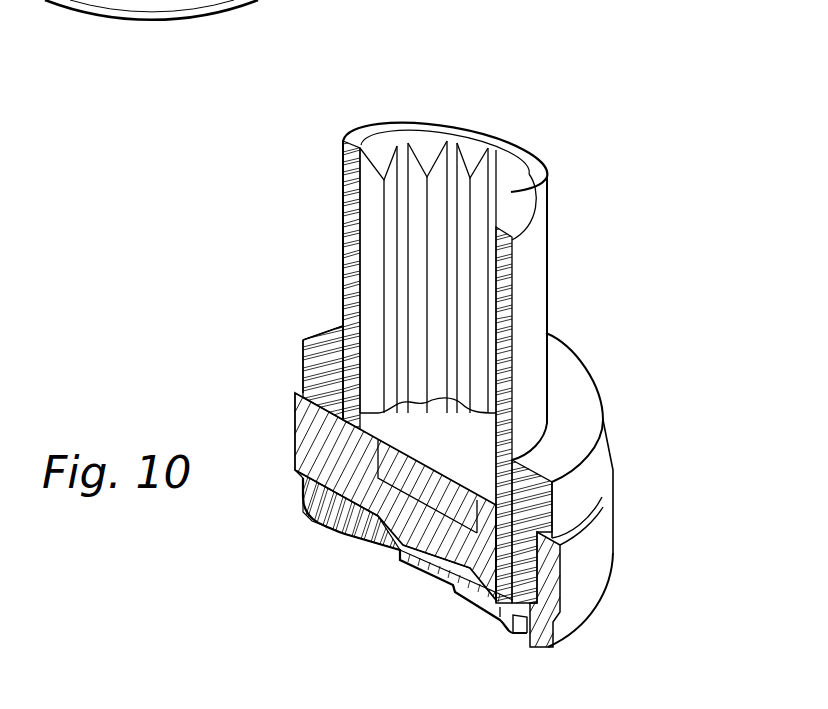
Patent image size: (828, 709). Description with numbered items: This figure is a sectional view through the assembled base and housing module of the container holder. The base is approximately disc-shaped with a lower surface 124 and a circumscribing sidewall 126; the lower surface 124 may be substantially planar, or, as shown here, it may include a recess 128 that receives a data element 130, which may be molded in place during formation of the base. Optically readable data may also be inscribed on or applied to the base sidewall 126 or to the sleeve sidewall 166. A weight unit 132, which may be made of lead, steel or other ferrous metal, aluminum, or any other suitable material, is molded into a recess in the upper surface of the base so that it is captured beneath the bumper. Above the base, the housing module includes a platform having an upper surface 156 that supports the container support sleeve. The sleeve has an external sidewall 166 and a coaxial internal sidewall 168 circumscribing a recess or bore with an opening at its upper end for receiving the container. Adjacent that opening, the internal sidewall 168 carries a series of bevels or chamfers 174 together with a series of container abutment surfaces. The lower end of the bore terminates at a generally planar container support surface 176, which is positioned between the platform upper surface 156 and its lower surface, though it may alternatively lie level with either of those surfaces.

The lower surface 124 is at (478, 605).
The circumscribing sidewall 126 is at (563, 622).
The recess 128 is at (407, 565).
The data element 130 is at (437, 573).
The weight unit 132 is at (372, 520).
The upper surface 156 is at (577, 385).
The external sidewall 166 is at (540, 248).
The internal sidewall 168 is at (380, 150).
The bevels or chamfers 174 is at (512, 170).
The container support surface 176 is at (438, 438).